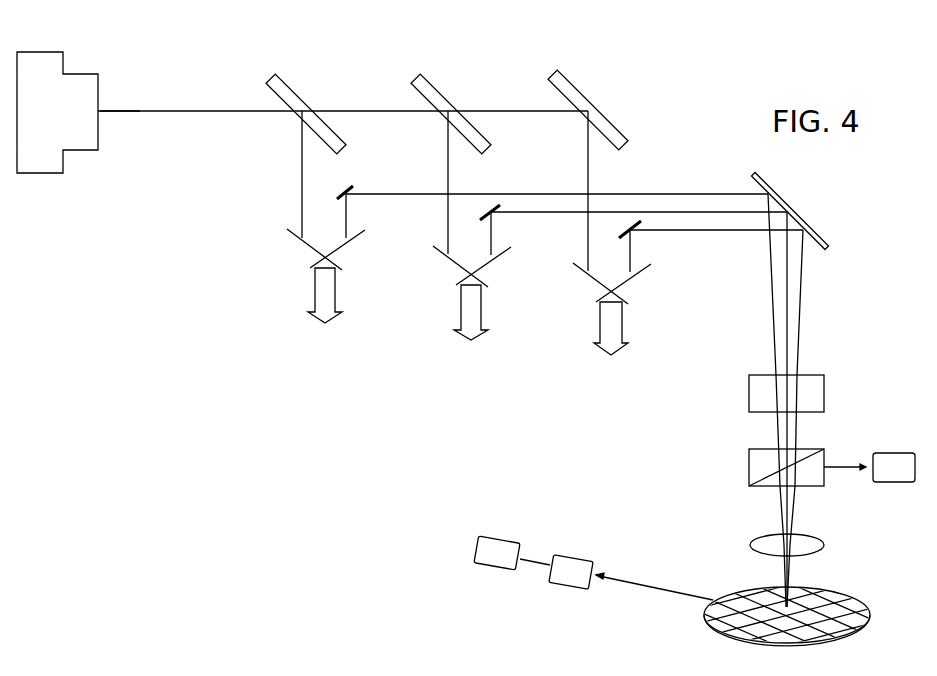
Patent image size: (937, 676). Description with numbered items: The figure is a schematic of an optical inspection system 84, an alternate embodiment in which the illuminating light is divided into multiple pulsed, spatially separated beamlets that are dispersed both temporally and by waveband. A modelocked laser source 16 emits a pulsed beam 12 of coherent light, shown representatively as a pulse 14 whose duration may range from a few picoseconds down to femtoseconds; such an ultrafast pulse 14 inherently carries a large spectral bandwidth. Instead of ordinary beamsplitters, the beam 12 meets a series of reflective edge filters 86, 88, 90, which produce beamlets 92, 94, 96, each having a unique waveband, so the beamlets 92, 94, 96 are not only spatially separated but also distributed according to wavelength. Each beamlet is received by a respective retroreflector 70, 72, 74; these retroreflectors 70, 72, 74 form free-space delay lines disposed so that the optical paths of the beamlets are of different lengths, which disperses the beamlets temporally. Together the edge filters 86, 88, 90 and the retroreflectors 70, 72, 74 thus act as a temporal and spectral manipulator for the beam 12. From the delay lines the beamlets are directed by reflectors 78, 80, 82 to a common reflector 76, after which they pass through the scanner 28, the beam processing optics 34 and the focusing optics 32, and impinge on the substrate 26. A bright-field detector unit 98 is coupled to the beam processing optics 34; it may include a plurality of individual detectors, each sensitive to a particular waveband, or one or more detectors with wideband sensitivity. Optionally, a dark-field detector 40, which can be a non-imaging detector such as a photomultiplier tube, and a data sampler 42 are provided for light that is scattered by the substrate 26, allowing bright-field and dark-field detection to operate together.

The optical inspection system 84 is at (717, 83).
The modelocked laser source 16 is at (43, 52).
The pulse 14 is at (119, 107).
The pulsed beam 12 is at (172, 113).
The reflective edge filter 86 is at (283, 86).
The reflective edge filter 88 is at (427, 87).
The reflective edge filter 90 is at (562, 82).
The beamlet 92 is at (302, 147).
The beamlet 94 is at (448, 143).
The beamlet 96 is at (588, 153).
The reflector 78 is at (338, 189).
The reflector 80 is at (481, 216).
The reflector 82 is at (622, 234).
The retroreflector 70 is at (305, 248).
The retroreflector 72 is at (455, 266).
The retroreflector 74 is at (593, 283).
The reflector 76 is at (800, 218).
The scanner 28 is at (749, 397).
The beam processing optics 34 is at (749, 469).
The bright-field detector unit 98 is at (893, 452).
The focusing optics 32 is at (750, 545).
The substrate 26 is at (850, 600).
The dark-field detector 40 is at (572, 558).
The data sampler 42 is at (496, 540).